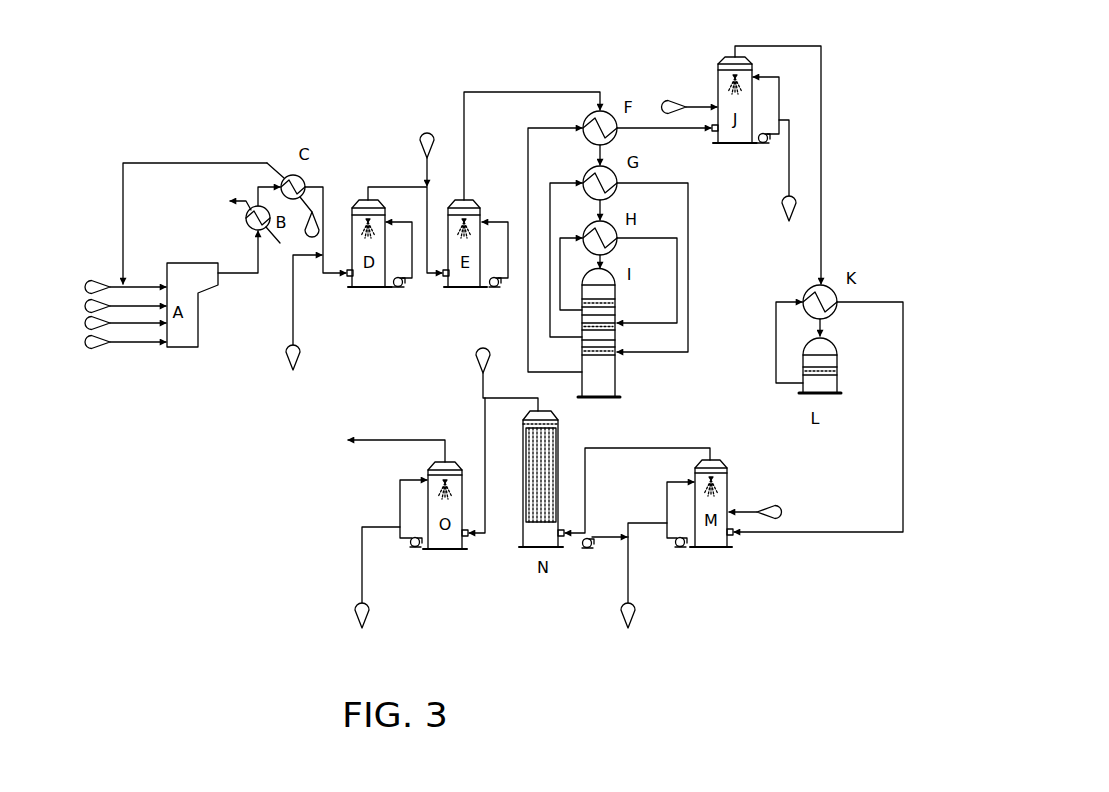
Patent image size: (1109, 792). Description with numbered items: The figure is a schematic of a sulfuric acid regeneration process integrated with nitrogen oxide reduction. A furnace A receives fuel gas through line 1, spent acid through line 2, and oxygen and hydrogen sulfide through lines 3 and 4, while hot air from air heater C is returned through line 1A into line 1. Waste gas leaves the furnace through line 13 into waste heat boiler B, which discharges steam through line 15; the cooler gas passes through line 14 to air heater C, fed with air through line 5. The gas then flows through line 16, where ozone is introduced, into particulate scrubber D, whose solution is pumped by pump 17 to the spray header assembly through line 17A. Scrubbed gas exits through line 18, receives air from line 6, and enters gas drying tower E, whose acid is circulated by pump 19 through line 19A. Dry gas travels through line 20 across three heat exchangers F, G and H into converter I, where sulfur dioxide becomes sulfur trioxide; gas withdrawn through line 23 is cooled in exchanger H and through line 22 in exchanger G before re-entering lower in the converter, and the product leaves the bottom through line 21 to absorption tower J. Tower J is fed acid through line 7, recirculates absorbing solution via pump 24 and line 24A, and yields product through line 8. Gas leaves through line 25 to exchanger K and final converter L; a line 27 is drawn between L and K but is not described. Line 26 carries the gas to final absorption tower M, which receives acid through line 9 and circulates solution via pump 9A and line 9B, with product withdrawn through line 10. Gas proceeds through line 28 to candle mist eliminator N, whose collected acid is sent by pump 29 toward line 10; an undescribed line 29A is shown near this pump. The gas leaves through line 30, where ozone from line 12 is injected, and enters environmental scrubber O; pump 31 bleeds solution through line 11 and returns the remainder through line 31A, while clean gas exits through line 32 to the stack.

The fuel gas line 1 is at (125, 287).
The spent acid line 2 is at (125, 342).
The oxygen line 3 is at (125, 306).
The hydrogen sulfide line 4 is at (125, 323).
The air line 5 is at (309, 217).
The air injection line 6 is at (427, 159).
The sulfuric acid feed line 7 is at (689, 107).
The product withdrawal line 8 is at (787, 170).
The sulfuric acid solution line 9 is at (755, 512).
The product acid line 10 is at (628, 582).
The scrubber bleed line 11 is at (377, 577).
The ozone injection line 12 is at (412, 333).
The waste gas line 13 is at (238, 263).
The cooled waste gas line 14 is at (264, 187).
The steam line 15 is at (230, 195).
The waste gas line to particulate scrubber 16 is at (326, 226).
The particulate scrubber pump 17 is at (404, 292).
The spray header feed line 17A is at (404, 239).
The scrubbed gas line 18 is at (405, 220).
The gas drying tower pump 19 is at (497, 295).
The liquid distributor feed line 19A is at (502, 239).
The dry gas line 20 is at (532, 135).
The converter bottom outlet line 21 is at (555, 259).
The second sulfur trioxide withdrawal line 22 is at (619, 270).
The first sulfur trioxide withdrawal line 23 is at (617, 283).
The absorption tower pump 24 is at (778, 105).
The absorbing solution return line 24A is at (755, 150).
The absorption tower gas outlet line 25 is at (795, 165).
The final converter outlet line 26 is at (832, 417).
The loop between vessel L and exchanger K 27 is at (771, 342).
The scrubbed gas line to mist eliminator 28 is at (637, 478).
The mist eliminator pump 29 is at (603, 554).
The line to scrubber M pump loop 29A is at (631, 527).
The mist eliminator gas outlet line 30 is at (494, 456).
The environmental scrubber pump 31 is at (410, 557).
The spray header return line 31A is at (390, 509).
The stack gas line 32 is at (396, 440).
The hot air line 1A is at (203, 208).
The final absorption tower pump 9A is at (684, 555).
The liquid distributor return line 9B is at (666, 510).